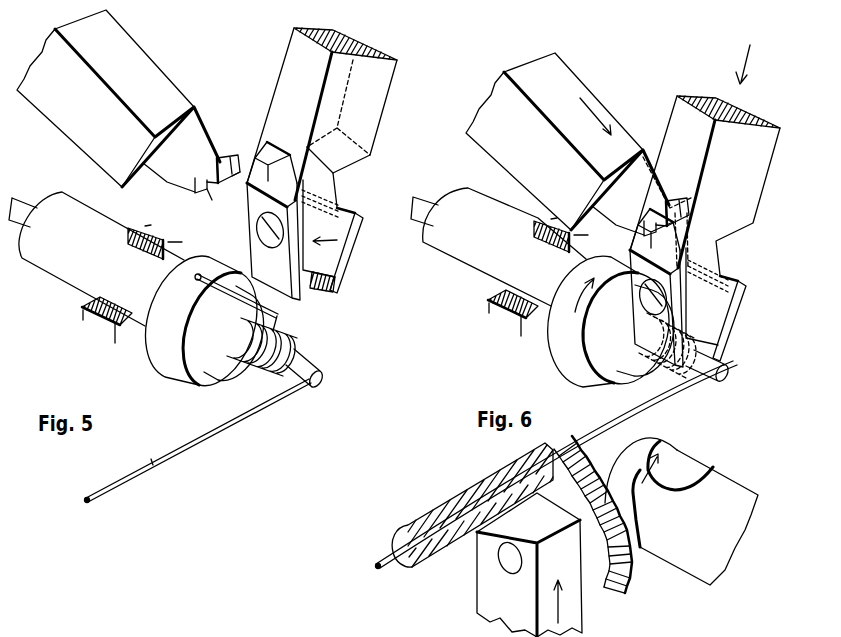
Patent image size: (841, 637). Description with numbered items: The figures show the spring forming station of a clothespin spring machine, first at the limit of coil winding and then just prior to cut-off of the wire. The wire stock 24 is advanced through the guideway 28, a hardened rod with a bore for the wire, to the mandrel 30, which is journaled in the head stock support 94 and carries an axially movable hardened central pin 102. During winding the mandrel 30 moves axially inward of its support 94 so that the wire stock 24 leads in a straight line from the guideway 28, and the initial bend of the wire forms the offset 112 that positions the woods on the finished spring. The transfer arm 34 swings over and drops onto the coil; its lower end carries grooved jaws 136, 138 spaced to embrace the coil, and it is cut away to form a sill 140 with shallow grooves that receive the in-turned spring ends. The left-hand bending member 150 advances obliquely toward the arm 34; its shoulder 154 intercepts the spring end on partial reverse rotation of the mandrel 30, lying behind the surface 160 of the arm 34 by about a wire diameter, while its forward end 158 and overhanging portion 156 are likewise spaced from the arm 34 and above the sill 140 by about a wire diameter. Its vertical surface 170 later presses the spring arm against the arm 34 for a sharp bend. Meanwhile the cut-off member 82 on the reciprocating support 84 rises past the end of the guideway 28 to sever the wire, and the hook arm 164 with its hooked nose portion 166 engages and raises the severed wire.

In FIG. 5, the wire stock 24 is at (187, 444).
In FIG. 6, the wire stock 24 is at (393, 558).
In FIG. 6, the guideway 28 is at (447, 503).
In FIG. 5, the mandrel 30 is at (234, 384).
In FIG. 6, the mandrel 30 is at (561, 358).
In FIG. 5, the arm 34 is at (307, 110).
In FIG. 6, the arm 34 is at (696, 145).
In FIG. 6, the cut-off member 82 is at (607, 588).
In FIG. 6, the support 84 is at (522, 613).
In FIG. 5, the head stock support 94 is at (82, 318).
In FIG. 5, the central pin 102 is at (31, 206).
In FIG. 5, the offset 112 is at (281, 327).
In FIG. 5, the grooved jaw 136 is at (287, 276).
In FIG. 5, the grooved jaw 138 is at (343, 283).
In FIG. 5, the sill 140 is at (343, 206).
In FIG. 5, the bending member 150 is at (90, 110).
In FIG. 6, the bending member 150 is at (532, 140).
In FIG. 5, the shoulder 154 is at (220, 157).
In FIG. 5, the overhanging portion 156 is at (227, 177).
In FIG. 5, the forward end 158 is at (237, 170).
In FIG. 6, the surface 160 is at (718, 258).
In FIG. 6, the hook arm 164 is at (708, 540).
In FIG. 6, the hooked nose portion 166 is at (656, 433).
In FIG. 5, the vertical surface 170 is at (200, 192).